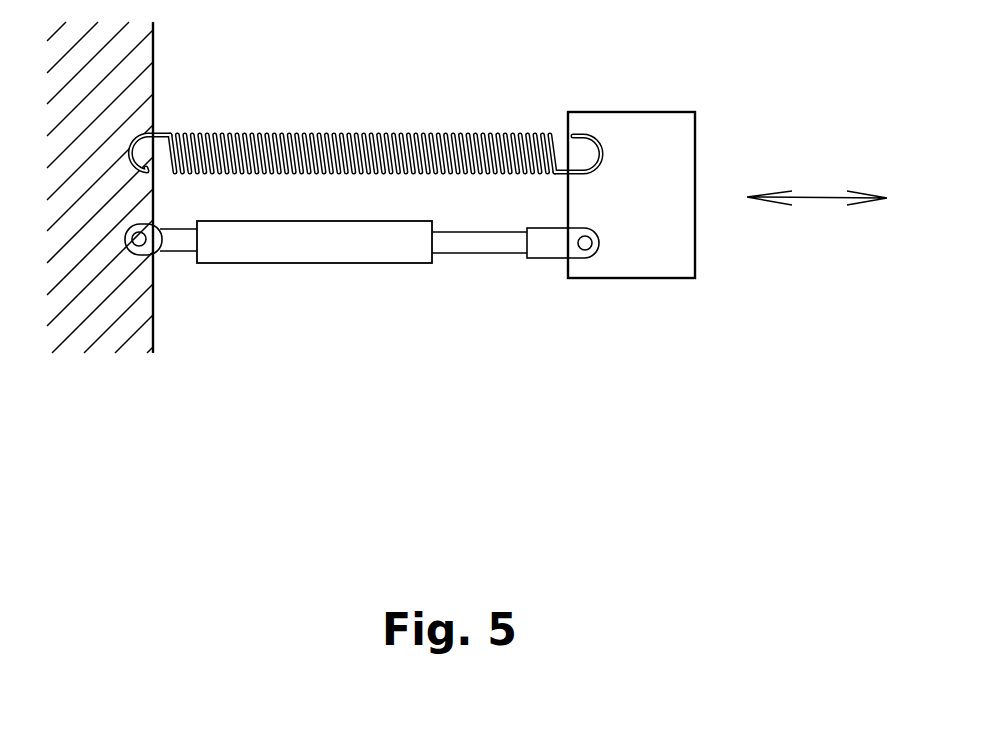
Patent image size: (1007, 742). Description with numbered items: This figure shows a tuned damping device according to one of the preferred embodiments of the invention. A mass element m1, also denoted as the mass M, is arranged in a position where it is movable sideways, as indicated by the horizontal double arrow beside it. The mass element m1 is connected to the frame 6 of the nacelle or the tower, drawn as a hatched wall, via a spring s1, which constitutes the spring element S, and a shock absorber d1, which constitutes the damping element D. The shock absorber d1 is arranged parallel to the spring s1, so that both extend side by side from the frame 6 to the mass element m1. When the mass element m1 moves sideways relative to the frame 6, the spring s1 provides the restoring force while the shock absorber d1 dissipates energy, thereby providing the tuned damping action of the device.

The frame 6 is at (143, 328).
The spring s1 is at (365, 125).
The spring element S is at (430, 143).
The shock absorber d1 is at (362, 272).
The damping element D is at (407, 255).
The mass element m1 is at (677, 196).
The mass M is at (682, 248).